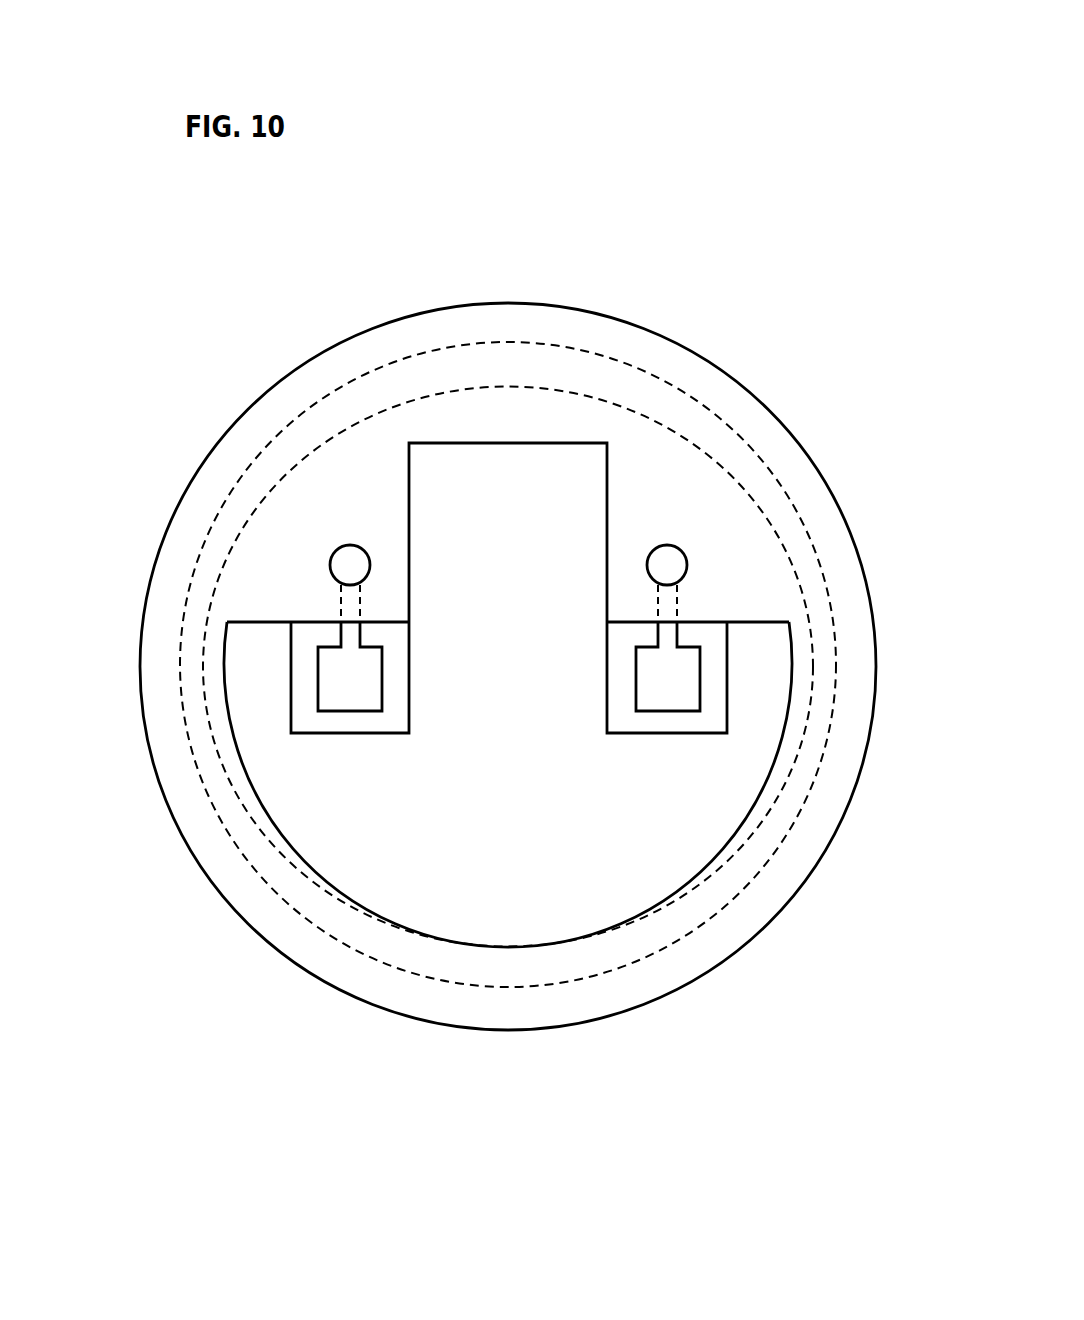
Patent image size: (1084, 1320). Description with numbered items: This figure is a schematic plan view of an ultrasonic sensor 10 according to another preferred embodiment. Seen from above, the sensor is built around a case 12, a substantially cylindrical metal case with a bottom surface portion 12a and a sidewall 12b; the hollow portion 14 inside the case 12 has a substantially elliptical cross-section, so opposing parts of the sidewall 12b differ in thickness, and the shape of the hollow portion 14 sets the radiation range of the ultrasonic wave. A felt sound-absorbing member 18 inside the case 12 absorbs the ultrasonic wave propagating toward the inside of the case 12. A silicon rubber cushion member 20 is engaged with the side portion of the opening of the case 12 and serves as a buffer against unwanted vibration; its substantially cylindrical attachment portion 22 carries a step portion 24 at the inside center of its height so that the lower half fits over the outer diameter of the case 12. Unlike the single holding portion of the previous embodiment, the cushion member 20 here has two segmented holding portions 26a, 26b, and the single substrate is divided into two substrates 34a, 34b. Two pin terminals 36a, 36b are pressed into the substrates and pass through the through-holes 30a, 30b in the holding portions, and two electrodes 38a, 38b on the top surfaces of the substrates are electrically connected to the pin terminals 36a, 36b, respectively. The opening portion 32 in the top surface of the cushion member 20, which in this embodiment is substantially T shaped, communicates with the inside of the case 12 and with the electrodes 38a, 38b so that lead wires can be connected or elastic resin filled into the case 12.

The ultrasonic sensor 10 is at (537, 184).
The case 12 is at (450, 983).
The bottom surface portion 12a is at (503, 905).
The sidewall 12b is at (573, 985).
The hollow portion 14 is at (588, 885).
The sound-absorbing member 18 is at (628, 870).
The cushion member 20 is at (293, 370).
The attachment portion 22 is at (272, 413).
The step portion 24 is at (268, 452).
The segmented holding portion 26a is at (370, 495).
The segmented holding portion 26b is at (648, 495).
The through-hole 30a is at (338, 543).
The through-hole 30b is at (678, 547).
The opening portion 32 is at (362, 862).
The substrate 34a is at (348, 728).
The substrate 34b is at (670, 727).
The pin terminal 36a is at (348, 563).
The pin terminal 36b is at (667, 567).
The electrode 38a is at (348, 678).
The electrode 38b is at (667, 680).